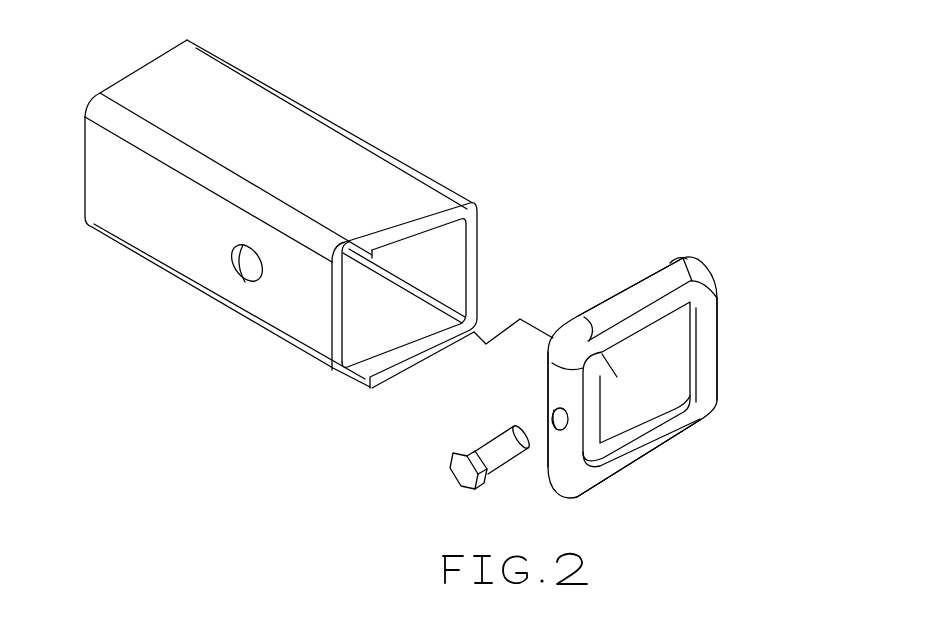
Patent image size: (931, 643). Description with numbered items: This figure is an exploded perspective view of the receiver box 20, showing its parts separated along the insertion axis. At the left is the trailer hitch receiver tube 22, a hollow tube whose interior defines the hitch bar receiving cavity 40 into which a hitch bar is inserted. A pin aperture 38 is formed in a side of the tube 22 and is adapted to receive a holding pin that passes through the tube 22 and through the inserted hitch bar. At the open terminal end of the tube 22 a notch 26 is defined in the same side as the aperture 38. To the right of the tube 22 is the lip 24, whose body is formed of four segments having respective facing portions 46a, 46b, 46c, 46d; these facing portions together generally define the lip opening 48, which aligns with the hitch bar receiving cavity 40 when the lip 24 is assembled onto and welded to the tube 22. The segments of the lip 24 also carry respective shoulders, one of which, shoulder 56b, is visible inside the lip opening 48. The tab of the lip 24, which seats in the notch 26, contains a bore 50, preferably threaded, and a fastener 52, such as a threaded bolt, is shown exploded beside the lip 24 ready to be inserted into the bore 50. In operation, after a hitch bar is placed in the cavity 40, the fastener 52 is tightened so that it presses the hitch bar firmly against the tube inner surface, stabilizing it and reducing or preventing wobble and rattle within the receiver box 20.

The receiver box 20 is at (573, 82).
The trailer hitch receiver tube 22 is at (382, 97).
The lip 24 is at (652, 216).
The notch 26 is at (355, 333).
The pin aperture 38 is at (235, 269).
The hitch bar receiving cavity 40 is at (417, 270).
The facing portion 46a is at (637, 323).
The facing portion 46b is at (718, 359).
The facing portion 46c is at (660, 452).
The facing portion 46d is at (592, 445).
The lip opening 48 is at (655, 377).
The bore 50 is at (540, 413).
The fastener 52 is at (462, 474).
The shoulder 56b is at (690, 353).